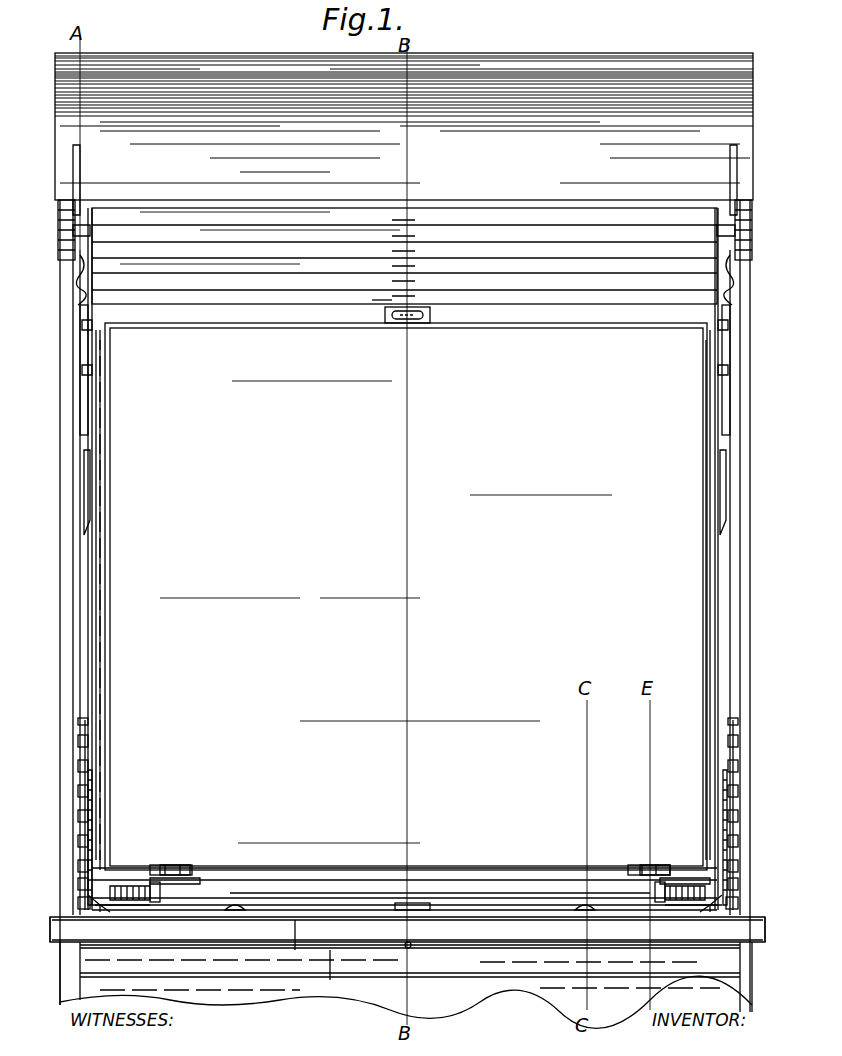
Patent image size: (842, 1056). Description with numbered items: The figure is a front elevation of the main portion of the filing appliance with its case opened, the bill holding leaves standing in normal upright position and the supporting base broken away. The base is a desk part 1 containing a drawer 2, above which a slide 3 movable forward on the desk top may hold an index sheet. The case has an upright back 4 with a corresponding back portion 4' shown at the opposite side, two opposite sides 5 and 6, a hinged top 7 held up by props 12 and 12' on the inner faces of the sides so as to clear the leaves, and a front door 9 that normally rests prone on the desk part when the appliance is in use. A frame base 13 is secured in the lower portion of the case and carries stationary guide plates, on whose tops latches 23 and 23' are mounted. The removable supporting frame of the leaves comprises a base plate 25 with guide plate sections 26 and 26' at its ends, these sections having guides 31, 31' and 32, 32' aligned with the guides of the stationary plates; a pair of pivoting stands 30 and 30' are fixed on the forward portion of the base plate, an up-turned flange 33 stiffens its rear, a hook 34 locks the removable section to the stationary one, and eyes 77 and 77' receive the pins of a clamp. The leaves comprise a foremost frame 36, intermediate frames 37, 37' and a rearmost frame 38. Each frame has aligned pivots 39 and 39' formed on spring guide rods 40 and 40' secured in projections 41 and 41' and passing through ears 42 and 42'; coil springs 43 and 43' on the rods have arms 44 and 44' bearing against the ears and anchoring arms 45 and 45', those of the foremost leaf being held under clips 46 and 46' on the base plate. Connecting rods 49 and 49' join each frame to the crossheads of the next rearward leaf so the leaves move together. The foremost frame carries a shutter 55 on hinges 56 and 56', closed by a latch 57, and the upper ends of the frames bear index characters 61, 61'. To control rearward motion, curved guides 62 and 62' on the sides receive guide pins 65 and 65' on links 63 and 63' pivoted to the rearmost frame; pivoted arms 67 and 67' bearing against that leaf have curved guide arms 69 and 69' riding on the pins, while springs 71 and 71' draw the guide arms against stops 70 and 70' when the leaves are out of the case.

The desk part 1 is at (70, 980).
The drawer 2 is at (490, 1000).
The slide 3 is at (450, 945).
The back 4 is at (61, 559).
The sash stile 4' is at (746, 559).
The side 5 is at (72, 562).
The side 6 is at (745, 560).
The top 7 is at (212, 60).
The front door 9 is at (330, 960).
The prop 12 is at (51, 174).
The prop 12' is at (756, 167).
The frame base 13 is at (308, 890).
The latch 23 is at (56, 712).
The latch 23' is at (757, 704).
The base plate 25 is at (300, 950).
The guide plate section 26 is at (55, 815).
The guide plate section 26' is at (760, 815).
The pivoting stand 30 is at (57, 906).
The pivoting stand 30' is at (757, 906).
The guide 31 is at (56, 875).
The guide 31' is at (56, 803).
The guide 32 is at (756, 875).
The guide 32' is at (758, 803).
The flange 33 is at (480, 900).
The hook 34 is at (410, 903).
The foremost leaf frame 36 is at (100, 467).
The intermediate frame 37 is at (210, 310).
The intermediate frame 37' is at (235, 222).
The rearmost frame 38 is at (325, 222).
The pivot 39 is at (44, 930).
The pivot 39' is at (758, 939).
The spring guide 40 is at (172, 913).
The spring guide 40' is at (638, 911).
The projection 41 is at (66, 933).
The projection 41' is at (713, 933).
The ear 42 is at (122, 952).
The ear 42' is at (655, 965).
The coil spring 43 is at (167, 855).
The coil spring 43' is at (685, 853).
The spring arm 44 is at (176, 855).
The spring arm 44' is at (660, 835).
The spring arm 45 is at (84, 958).
The spring arm 45' is at (693, 950).
The clip 46 is at (130, 915).
The clip 46' is at (683, 916).
The connecting rod 49 is at (58, 837).
The connecting rod 49' is at (691, 835).
The shutter 55 is at (135, 628).
The hinge 56 is at (192, 858).
The hinge 56' is at (637, 858).
The latch 57 is at (412, 318).
The index character 61 is at (355, 328).
The index character 61' is at (412, 240).
The curved guide 62 is at (55, 370).
The curved guide 62' is at (754, 370).
The link 63 is at (118, 595).
The link 63' is at (685, 595).
The guide pin 65 is at (57, 372).
The guide pin 65' is at (752, 382).
The arm 67 is at (56, 492).
The arm 67' is at (753, 492).
The guide arm 69 is at (57, 336).
The guide arm 69' is at (752, 329).
The stop 70 is at (92, 220).
The stop 70' is at (715, 220).
The spring 71 is at (55, 280).
The spring 71' is at (697, 280).
The eye 77 is at (252, 876).
The eye 77' is at (567, 875).